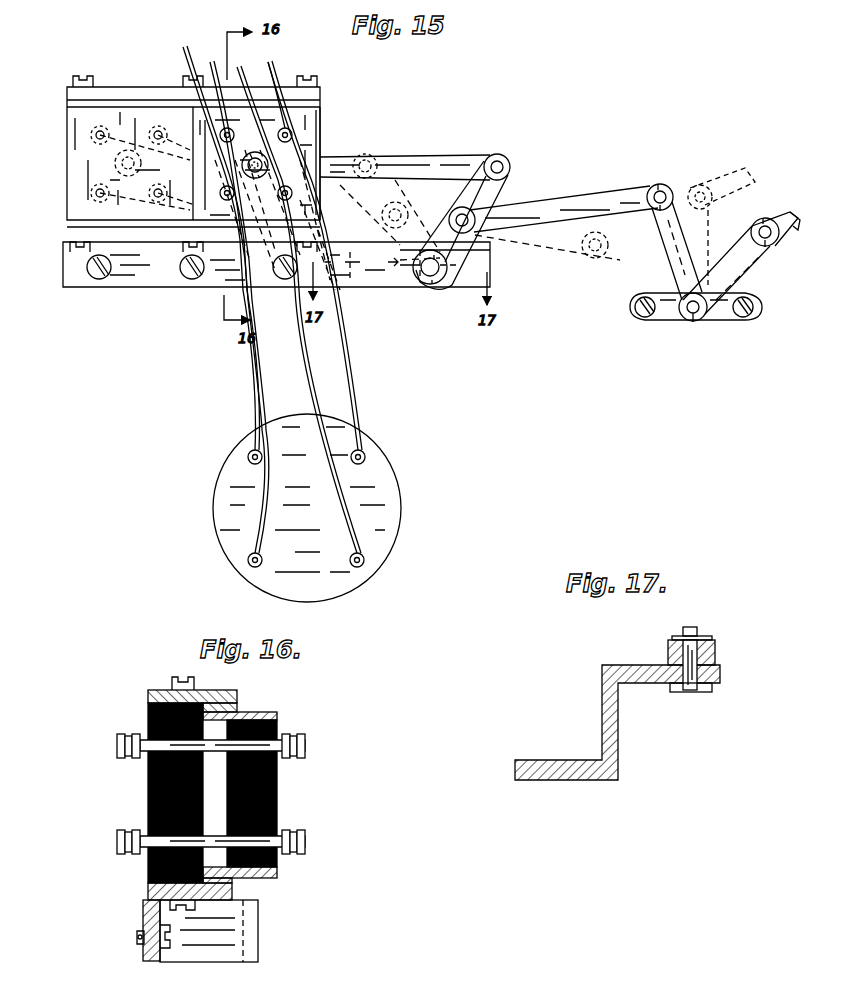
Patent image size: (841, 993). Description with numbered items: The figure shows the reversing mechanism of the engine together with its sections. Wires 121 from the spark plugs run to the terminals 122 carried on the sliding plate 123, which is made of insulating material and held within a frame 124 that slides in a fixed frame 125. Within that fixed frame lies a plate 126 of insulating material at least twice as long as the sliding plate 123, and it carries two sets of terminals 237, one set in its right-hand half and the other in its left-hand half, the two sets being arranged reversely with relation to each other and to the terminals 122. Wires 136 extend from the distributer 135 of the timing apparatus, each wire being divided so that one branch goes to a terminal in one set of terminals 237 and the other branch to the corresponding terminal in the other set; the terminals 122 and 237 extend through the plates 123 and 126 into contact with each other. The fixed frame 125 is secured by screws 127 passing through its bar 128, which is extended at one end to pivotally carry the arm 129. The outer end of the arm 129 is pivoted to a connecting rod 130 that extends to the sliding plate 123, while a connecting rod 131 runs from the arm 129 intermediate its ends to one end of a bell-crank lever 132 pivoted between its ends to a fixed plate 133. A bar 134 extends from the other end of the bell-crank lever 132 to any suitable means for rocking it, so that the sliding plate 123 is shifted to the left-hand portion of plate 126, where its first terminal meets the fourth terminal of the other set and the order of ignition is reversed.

In FIG. 15, the wires 121 is at (270, 63).
In FIG. 15, the terminals 122 is at (292, 133).
In FIG. 16, the terminals 122 is at (290, 740).
In FIG. 15, the sliding plate 123 is at (324, 141).
In FIG. 16, the sliding plate 123 is at (278, 797).
In FIG. 16, the frame 124 is at (268, 712).
In FIG. 16, the fixed frame 125 is at (236, 690).
In FIG. 15, the plate 126 is at (75, 178).
In FIG. 16, the plate 126 is at (147, 797).
In FIG. 15, the screws 127 is at (99, 280).
In FIG. 16, the screws 127 is at (137, 938).
In FIG. 15, the bar 128 is at (190, 280).
In FIG. 16, the bar 128 is at (255, 928).
In FIG. 17, the bar 128 is at (571, 760).
In FIG. 15, the arm 129 is at (505, 191).
In FIG. 17, the arm 129 is at (718, 652).
In FIG. 15, the connecting rod 130 is at (445, 158).
In FIG. 15, the connecting rod 131 is at (612, 190).
In FIG. 15, the bell-crank lever 132 is at (670, 235).
In FIG. 15, the fixed plate 133 is at (665, 320).
In FIG. 15, the bar 134 is at (770, 210).
In FIG. 15, the distributer 135 is at (393, 480).
In FIG. 15, the wires 136 is at (350, 348).
In FIG. 16, the terminals 237 is at (135, 738).